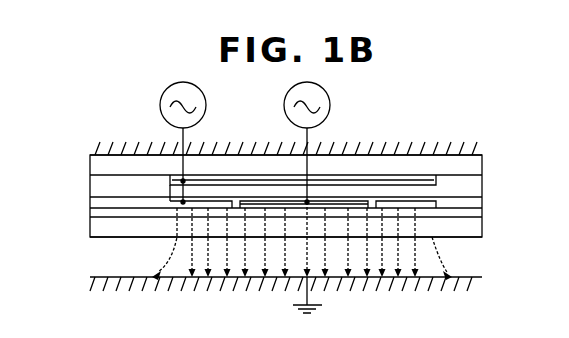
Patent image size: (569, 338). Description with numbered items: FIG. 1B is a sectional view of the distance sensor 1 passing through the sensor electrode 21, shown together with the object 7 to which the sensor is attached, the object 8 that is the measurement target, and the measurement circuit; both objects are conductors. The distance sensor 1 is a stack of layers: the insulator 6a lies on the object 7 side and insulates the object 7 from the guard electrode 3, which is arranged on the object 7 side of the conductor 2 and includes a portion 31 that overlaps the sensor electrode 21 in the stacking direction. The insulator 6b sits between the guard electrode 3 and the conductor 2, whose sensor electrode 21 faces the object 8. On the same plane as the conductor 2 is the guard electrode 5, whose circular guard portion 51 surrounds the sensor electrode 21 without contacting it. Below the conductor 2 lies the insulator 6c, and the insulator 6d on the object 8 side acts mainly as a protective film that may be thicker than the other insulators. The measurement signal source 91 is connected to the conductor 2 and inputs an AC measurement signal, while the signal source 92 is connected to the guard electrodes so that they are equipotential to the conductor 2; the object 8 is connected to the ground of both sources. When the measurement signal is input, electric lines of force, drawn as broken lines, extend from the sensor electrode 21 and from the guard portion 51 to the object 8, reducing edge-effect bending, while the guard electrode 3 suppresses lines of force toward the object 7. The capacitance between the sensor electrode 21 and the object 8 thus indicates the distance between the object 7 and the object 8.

The distance sensor 1 is at (503, 141).
The conductor 2 is at (355, 192).
The guard electrode 3 is at (419, 172).
The guard electrode 5 is at (167, 191).
The object 7 is at (392, 150).
The object 8 is at (480, 277).
The sensor electrode 21 is at (265, 203).
The portion 31 is at (235, 182).
The guard portion 51 is at (170, 206).
The insulator 6a is at (482, 163).
The insulator 6b is at (482, 182).
The insulator 6c is at (482, 198).
The insulator 6d is at (90, 232).
The measurement signal source 91 is at (330, 99).
The signal source 92 is at (206, 99).